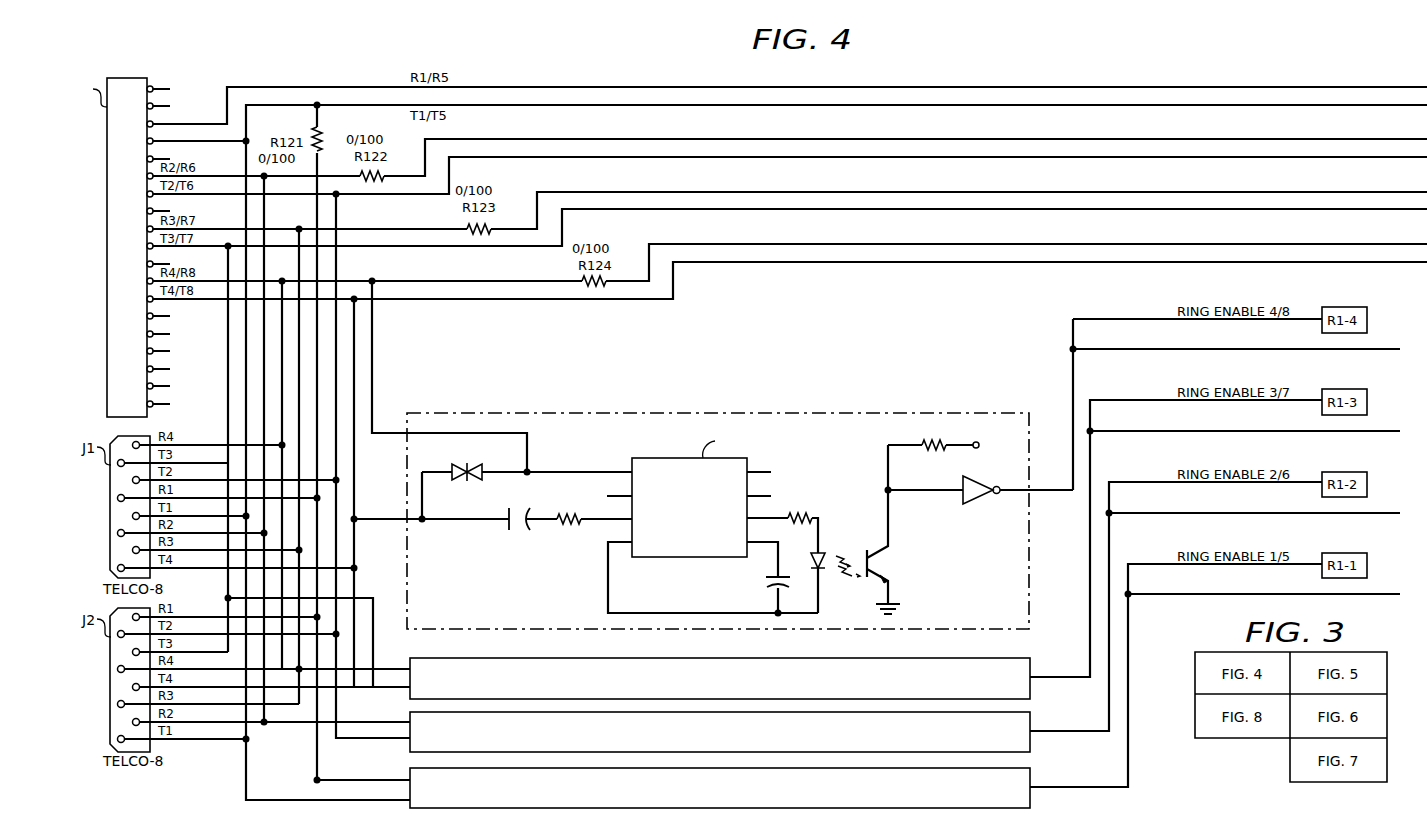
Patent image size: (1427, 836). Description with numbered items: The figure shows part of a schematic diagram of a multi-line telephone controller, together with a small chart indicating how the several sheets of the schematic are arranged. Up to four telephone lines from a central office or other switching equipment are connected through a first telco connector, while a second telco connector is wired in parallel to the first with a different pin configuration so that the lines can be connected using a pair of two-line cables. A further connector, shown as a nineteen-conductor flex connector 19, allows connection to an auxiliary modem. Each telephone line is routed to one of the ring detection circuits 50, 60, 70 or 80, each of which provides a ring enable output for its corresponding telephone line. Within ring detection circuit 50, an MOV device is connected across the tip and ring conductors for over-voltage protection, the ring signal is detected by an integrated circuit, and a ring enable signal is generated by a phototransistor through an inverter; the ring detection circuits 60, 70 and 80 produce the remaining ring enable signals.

The flex connector J8 19 is at (123, 237).
The ring detection circuit 50 is at (713, 521).
The ring detection circuit 60 is at (720, 678).
The ring detection circuit 70 is at (720, 732).
The ring detection circuit 80 is at (720, 788).